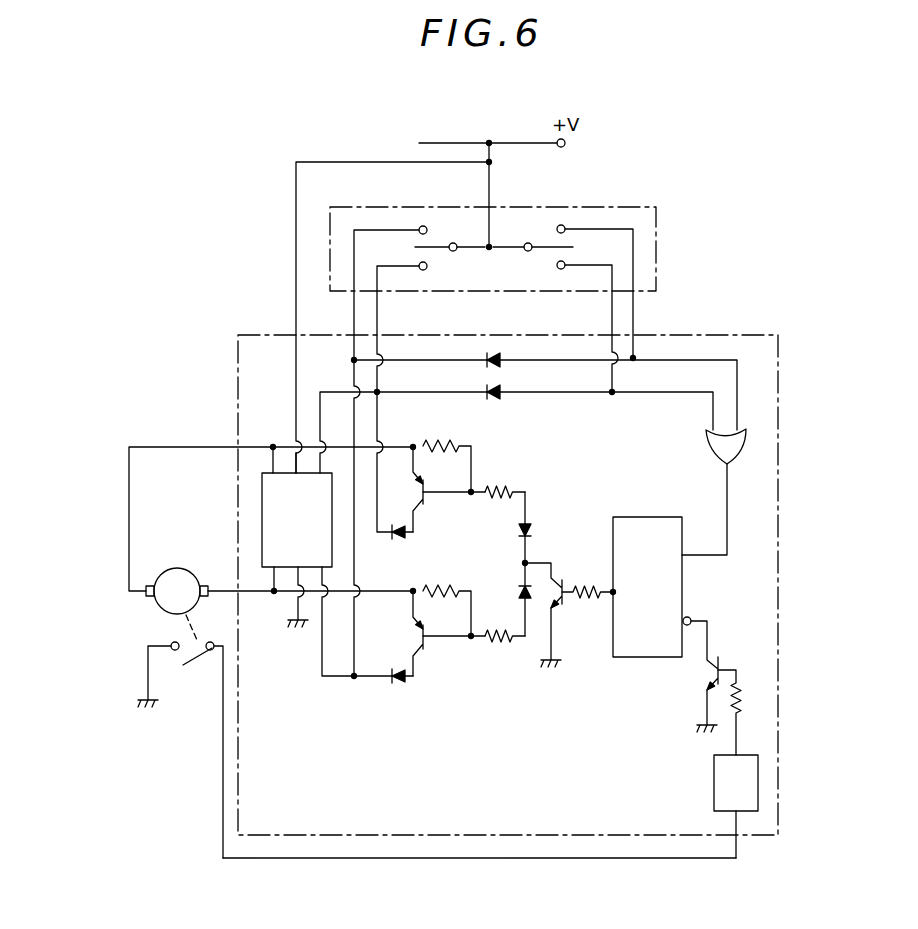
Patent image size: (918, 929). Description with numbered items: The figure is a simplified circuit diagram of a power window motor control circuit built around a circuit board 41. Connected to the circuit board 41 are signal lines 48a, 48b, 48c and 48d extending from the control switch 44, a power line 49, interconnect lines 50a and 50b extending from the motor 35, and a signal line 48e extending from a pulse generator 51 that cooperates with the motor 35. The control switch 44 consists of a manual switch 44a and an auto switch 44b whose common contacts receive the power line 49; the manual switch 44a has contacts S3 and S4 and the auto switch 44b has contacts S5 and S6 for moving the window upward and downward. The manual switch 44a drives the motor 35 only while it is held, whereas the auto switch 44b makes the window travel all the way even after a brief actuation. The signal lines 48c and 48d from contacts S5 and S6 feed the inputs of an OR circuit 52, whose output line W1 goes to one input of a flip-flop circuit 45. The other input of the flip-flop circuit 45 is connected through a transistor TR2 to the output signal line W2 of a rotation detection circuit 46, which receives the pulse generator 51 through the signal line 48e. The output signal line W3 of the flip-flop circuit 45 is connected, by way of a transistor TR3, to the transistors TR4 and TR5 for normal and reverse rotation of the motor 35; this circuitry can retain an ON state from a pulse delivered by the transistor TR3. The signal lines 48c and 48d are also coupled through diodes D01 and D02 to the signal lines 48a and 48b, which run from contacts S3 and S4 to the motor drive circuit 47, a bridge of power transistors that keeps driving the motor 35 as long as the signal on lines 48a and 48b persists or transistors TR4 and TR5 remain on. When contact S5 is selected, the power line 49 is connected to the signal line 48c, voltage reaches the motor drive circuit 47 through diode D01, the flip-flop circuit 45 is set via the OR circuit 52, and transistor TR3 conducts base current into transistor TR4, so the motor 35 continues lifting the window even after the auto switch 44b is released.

The motor 35 is at (174, 567).
The circuit board 41 is at (738, 333).
The control switch 44 is at (639, 205).
The manual switch 44a is at (447, 232).
The auto switch 44b is at (552, 237).
The flip-flop circuit 45 is at (649, 516).
The rotation detection circuit 46 is at (713, 783).
The motor drive circuit 47 is at (327, 561).
The signal line 48a is at (352, 316).
The signal line 48b is at (380, 316).
The signal line 48c is at (670, 355).
The signal line 48d is at (668, 394).
The signal line 48e is at (522, 861).
The power line 49 is at (378, 160).
The interconnect line 50a is at (184, 446).
The interconnect line 50b is at (220, 590).
The pulse generator 51 is at (193, 672).
The OR circuit 52 is at (745, 441).
The contact S3 is at (411, 220).
The contact S4 is at (411, 275).
The contact S5 is at (574, 220).
The contact S6 is at (574, 274).
The diode D01 is at (545, 383).
The diode D02 is at (516, 429).
The transistor TR2 is at (723, 676).
The transistor TR3 is at (562, 615).
The transistor TR4 is at (458, 634).
The transistor TR5 is at (458, 489).
The output line W1 is at (731, 531).
The output signal line W2 is at (738, 739).
The output signal line W3 is at (612, 589).